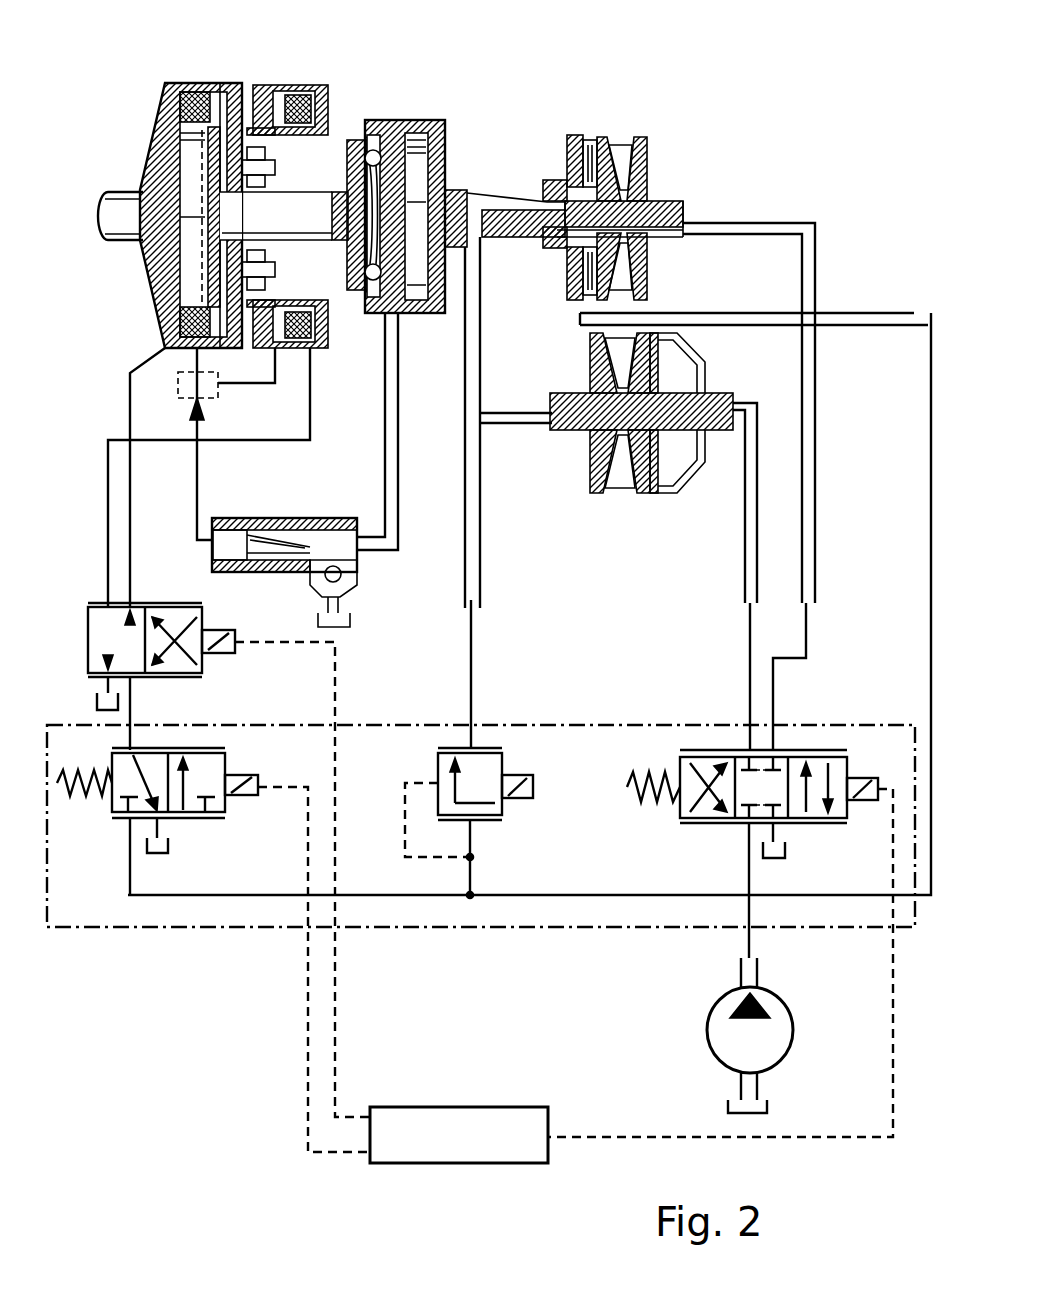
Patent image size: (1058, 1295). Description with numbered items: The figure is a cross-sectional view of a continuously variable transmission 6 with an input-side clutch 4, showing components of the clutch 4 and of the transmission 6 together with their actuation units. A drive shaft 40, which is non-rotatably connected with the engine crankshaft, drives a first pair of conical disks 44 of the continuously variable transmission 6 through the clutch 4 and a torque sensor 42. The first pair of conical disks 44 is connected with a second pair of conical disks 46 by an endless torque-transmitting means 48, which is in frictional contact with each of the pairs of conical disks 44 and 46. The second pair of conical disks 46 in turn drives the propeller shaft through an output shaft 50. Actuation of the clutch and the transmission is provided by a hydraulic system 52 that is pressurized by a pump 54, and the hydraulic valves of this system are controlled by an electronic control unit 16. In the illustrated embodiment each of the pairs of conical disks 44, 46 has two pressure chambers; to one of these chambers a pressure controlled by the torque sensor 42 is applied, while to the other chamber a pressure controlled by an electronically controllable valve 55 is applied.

The clutch 4 is at (205, 88).
The drive shaft 40 is at (130, 195).
The torque sensor 42 is at (424, 108).
The continuously variable transmission 6 is at (492, 114).
The first pair of conical disks 44 is at (603, 137).
The endless torque-transmitting means 48 is at (617, 167).
The second pair of conical disks 46 is at (593, 480).
The output shaft 50 is at (722, 423).
The hydraulic system 52 is at (178, 912).
The electronically controllable valve 55 is at (708, 823).
The pump 54 is at (727, 1038).
The electronic control unit 16 is at (482, 1150).